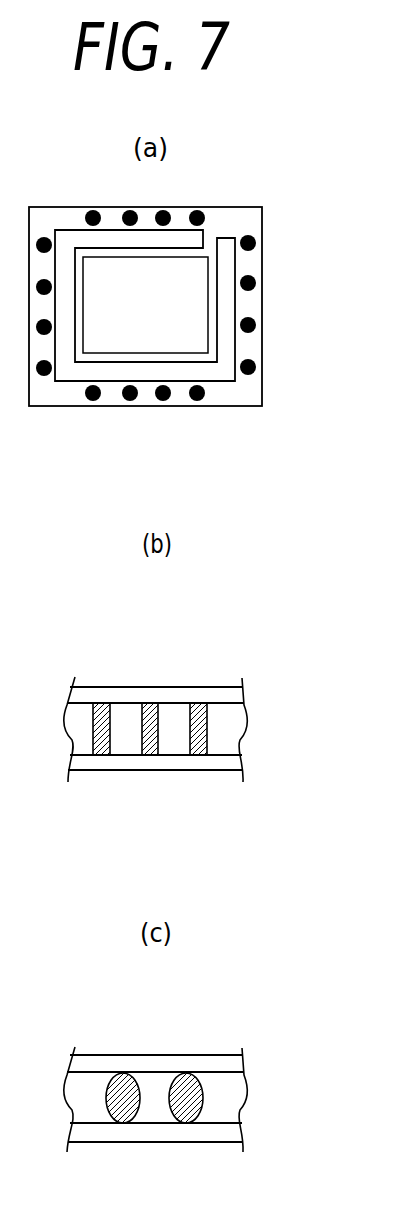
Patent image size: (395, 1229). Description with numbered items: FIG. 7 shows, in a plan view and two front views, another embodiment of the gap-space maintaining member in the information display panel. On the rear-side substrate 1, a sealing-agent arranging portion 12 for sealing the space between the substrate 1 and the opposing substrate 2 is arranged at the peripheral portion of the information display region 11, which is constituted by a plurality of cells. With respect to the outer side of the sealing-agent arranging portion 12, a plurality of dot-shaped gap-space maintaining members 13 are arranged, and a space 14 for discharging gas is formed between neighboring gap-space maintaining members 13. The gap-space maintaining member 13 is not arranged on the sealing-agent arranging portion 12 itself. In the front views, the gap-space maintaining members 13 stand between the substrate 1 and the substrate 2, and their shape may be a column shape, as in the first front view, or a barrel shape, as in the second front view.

The substrate 1 is at (190, 406).
The substrate 2 is at (197, 695).
The information display region 11 is at (193, 343).
The sealing-agent arranging portion 12 is at (227, 272).
The gap-space maintaining member 13 is at (256, 325).
The space for discharging gas 14 is at (233, 222).